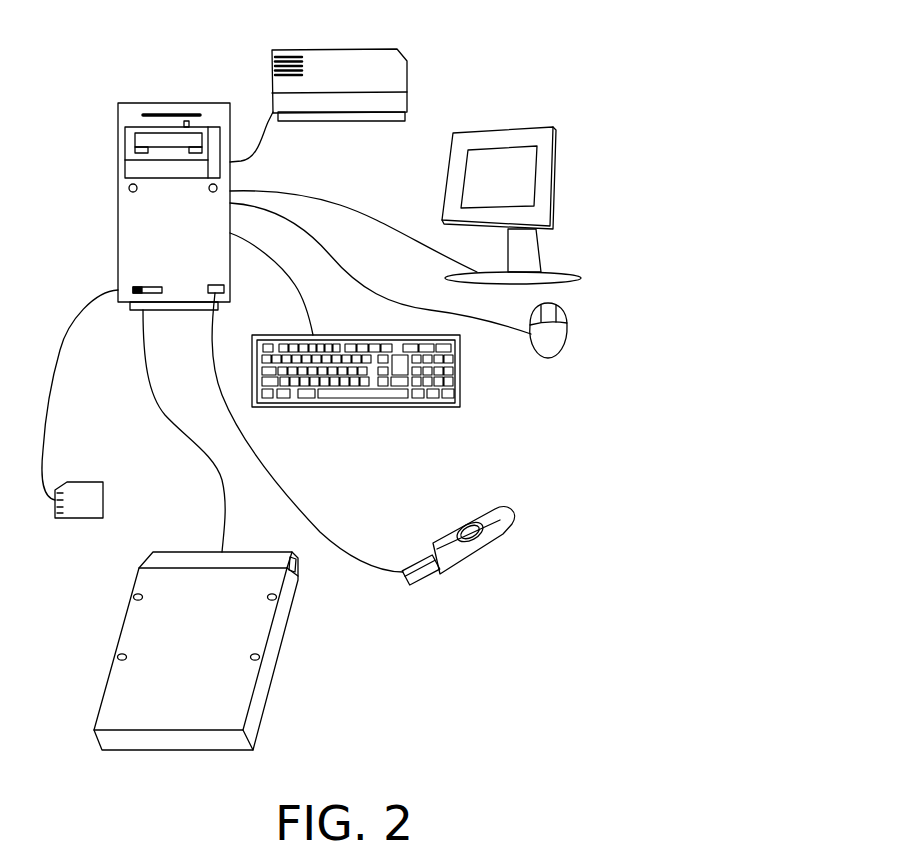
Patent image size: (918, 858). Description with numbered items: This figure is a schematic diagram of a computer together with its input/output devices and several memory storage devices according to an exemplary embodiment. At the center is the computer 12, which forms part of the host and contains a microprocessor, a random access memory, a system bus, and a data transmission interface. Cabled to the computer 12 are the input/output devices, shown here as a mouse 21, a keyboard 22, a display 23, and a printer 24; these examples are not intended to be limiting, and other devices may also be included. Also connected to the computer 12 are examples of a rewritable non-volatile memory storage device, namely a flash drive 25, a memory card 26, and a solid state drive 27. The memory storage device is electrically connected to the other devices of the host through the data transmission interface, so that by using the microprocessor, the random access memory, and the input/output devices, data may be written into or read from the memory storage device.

The computer 12 is at (177, 103).
The mouse 21 is at (568, 333).
The keyboard 22 is at (461, 381).
The display 23 is at (513, 128).
The printer 24 is at (334, 50).
The flash drive 25 is at (453, 533).
The memory card 26 is at (103, 489).
The solid state drive 27 is at (245, 540).